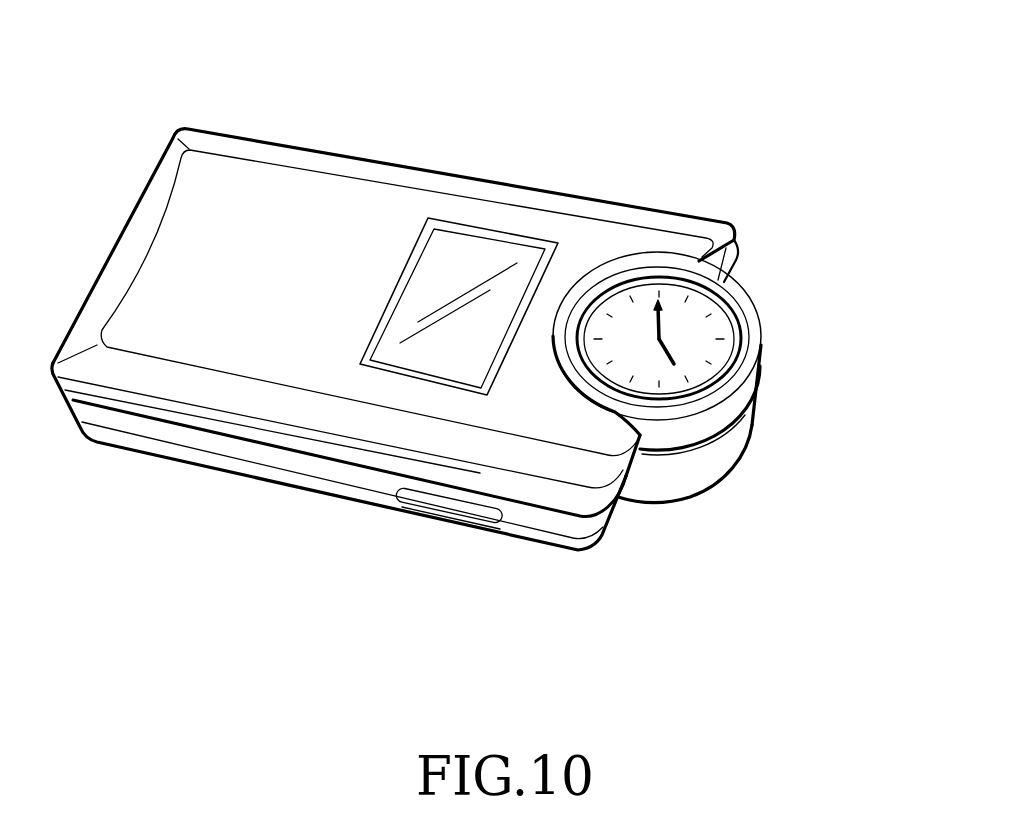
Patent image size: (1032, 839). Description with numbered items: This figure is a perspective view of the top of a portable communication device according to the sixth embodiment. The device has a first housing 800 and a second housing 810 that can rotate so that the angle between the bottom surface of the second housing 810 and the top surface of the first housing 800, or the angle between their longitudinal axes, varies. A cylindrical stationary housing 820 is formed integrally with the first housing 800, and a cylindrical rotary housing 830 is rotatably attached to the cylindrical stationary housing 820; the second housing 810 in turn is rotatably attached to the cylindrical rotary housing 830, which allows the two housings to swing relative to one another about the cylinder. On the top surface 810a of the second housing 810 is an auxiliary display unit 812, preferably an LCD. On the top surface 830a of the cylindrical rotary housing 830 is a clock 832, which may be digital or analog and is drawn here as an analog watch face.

The first housing 800 is at (355, 497).
The second housing 810 is at (390, 165).
The top surface of the second housing 810a is at (303, 200).
The auxiliary display unit 812 is at (492, 255).
The cylindrical stationary housing 820 is at (708, 462).
The cylindrical rotary housing 830 is at (733, 407).
The top surface of the cylindrical rotary housing 830a is at (750, 320).
The clock 832 is at (705, 357).